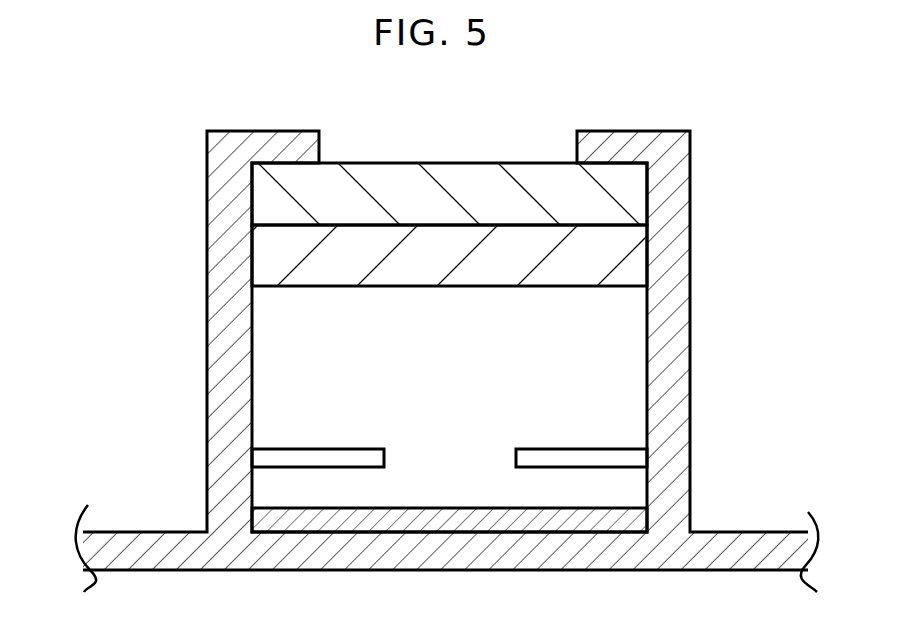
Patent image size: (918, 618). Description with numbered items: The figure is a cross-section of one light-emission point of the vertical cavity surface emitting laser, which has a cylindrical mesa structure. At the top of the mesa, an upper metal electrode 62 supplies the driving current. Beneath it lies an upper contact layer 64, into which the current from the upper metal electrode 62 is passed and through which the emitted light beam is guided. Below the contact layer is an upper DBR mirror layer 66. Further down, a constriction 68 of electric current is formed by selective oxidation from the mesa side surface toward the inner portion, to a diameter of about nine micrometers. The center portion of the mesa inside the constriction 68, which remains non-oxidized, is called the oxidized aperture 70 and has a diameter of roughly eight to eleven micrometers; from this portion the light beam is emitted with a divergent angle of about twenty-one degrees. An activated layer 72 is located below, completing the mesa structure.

The upper metal electrode 62 is at (637, 130).
The upper contact layer 64 is at (627, 190).
The upper DBR mirror layer 66 is at (617, 260).
The constriction of electric current 68 is at (617, 447).
The oxidized aperture 70 is at (438, 460).
The activated layer 72 is at (607, 505).